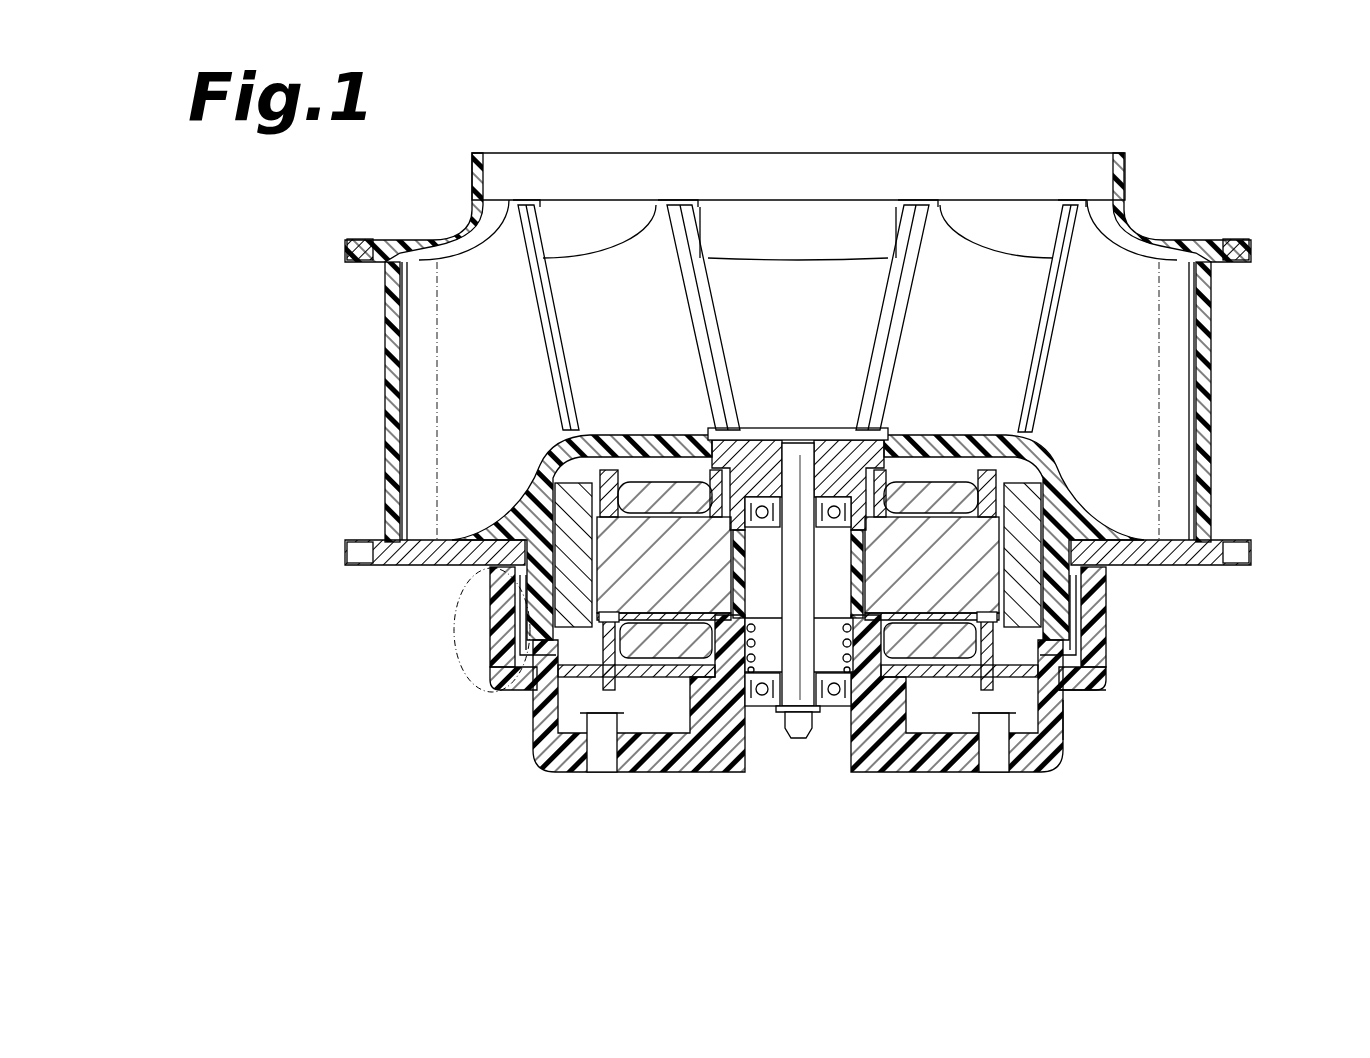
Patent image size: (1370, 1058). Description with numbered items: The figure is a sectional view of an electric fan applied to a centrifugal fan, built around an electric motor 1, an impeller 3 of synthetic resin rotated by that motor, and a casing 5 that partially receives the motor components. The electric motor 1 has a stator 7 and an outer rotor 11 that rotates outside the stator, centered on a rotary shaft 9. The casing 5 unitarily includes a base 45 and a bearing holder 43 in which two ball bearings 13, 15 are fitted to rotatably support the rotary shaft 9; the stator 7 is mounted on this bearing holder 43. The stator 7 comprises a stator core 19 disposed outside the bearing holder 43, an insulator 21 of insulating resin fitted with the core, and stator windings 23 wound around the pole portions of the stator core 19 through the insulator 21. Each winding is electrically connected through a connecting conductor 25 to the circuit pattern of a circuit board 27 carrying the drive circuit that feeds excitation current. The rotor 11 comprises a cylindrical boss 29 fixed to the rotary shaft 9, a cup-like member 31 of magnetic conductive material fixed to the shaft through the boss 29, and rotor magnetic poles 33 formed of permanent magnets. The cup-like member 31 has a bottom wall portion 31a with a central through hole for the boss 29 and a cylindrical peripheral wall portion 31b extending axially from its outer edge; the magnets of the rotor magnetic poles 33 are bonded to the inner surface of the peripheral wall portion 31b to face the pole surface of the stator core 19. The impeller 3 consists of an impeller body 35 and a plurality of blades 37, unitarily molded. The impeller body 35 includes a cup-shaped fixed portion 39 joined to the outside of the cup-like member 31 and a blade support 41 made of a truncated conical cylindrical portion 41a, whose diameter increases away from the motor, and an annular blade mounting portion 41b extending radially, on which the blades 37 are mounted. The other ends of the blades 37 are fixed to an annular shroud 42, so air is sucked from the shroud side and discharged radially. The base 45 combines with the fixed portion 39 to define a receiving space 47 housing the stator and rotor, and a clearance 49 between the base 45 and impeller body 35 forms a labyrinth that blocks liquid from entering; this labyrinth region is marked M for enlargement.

The electric motor 1 is at (1110, 653).
The impeller 3 is at (520, 437).
The casing 5 is at (660, 777).
The stator 7 is at (890, 590).
The rotary shaft 9 is at (545, 470).
The rotor 11 is at (1048, 445).
The ball bearing 13 is at (770, 505).
The ball bearing 15 is at (745, 700).
The stator core 19 is at (917, 590).
The insulator 21 is at (985, 400).
The stator windings 23 is at (1010, 440).
The connecting conductor 25 is at (1078, 683).
The circuit board 27 is at (1013, 657).
The boss 29 is at (838, 440).
The cup-like member 31 is at (1045, 395).
The bottom wall portion 31a is at (962, 433).
The peripheral wall portion 31b is at (1110, 600).
The rotor magnetic poles 33 is at (1110, 570).
The impeller body 35 is at (560, 430).
The blades 37 is at (600, 330).
The fixed portion 39 is at (628, 440).
The blade support 41 is at (430, 547).
The truncated conical cylindrical portion 41a is at (800, 543).
The annular blade mounting portion 41b is at (407, 550).
The annular shroud 42 is at (728, 172).
The bearing holder 43 is at (805, 745).
The base 45 is at (575, 755).
The receiving space 47 is at (583, 694).
The clearance 49 is at (520, 607).
The portion M is at (483, 667).